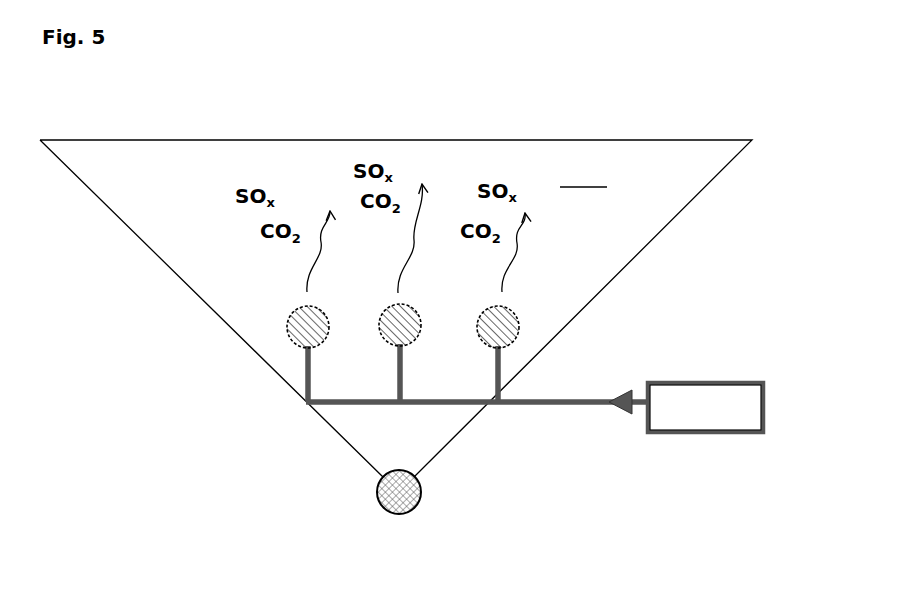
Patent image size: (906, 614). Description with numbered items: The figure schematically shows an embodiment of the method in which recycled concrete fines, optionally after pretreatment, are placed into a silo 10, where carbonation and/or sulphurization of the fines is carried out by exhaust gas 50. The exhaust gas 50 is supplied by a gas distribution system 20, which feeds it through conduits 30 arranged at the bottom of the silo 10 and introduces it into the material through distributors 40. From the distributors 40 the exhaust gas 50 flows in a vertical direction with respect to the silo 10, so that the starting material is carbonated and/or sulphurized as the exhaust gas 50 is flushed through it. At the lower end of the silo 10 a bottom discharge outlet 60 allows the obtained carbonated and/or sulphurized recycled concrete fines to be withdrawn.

The silo 10 is at (513, 140).
The gas distribution system 20 is at (588, 437).
The conduits 30 is at (500, 367).
The distributors 40 is at (468, 329).
The exhaust gas 50 is at (705, 407).
The bottom discharge outlet 60 is at (437, 498).